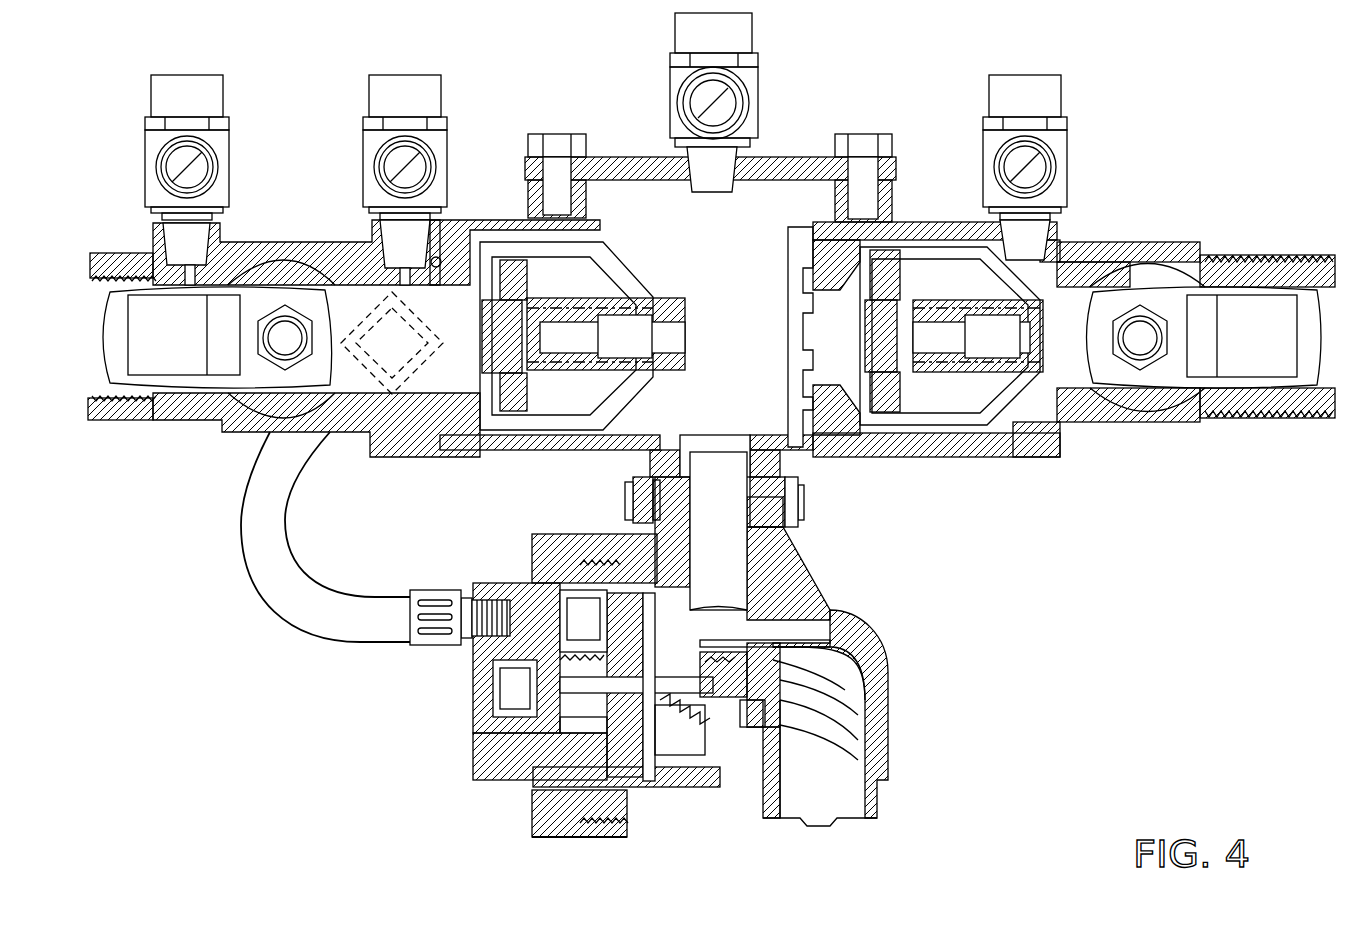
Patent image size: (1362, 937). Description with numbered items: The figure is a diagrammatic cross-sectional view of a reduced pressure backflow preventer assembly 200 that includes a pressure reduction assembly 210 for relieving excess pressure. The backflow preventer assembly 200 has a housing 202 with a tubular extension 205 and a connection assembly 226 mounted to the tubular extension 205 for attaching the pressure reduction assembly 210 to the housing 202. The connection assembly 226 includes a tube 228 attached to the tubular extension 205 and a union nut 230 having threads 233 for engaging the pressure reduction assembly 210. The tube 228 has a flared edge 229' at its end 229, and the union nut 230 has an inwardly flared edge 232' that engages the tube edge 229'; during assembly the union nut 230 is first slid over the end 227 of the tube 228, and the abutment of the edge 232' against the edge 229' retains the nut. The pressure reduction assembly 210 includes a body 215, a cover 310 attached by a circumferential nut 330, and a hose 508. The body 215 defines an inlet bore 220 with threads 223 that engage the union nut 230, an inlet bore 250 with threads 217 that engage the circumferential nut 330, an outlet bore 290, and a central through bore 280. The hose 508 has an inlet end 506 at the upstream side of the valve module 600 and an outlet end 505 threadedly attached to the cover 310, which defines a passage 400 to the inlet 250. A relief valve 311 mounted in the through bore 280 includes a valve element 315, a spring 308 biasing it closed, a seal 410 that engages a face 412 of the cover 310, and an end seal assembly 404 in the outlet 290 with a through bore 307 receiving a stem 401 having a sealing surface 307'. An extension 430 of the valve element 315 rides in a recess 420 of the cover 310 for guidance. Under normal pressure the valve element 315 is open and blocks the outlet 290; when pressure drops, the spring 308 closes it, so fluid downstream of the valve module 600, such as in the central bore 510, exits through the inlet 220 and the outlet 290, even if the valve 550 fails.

The reduced pressure backflow preventer assembly 200 is at (628, 86).
The housing 202 is at (490, 455).
The tubular extension 205 is at (668, 445).
The pressure reduction assembly 210 is at (805, 592).
The body 215 is at (885, 780).
The threads 217 is at (625, 825).
The inlet bore 220 is at (745, 515).
The threads 223 is at (783, 527).
The connection assembly 226 is at (905, 477).
The end 227 is at (692, 446).
The tube 228 is at (747, 440).
The end 229 is at (735, 487).
The flared edge 229' is at (602, 495).
The union nut 230 is at (790, 505).
The inwardly flared edge 232' is at (731, 485).
The threads 233 is at (633, 506).
The inlet bore 250 is at (583, 610).
The central through bore 280 is at (697, 632).
The outlet bore 290 is at (840, 803).
The through bore 307 is at (847, 691).
The sealing surface 307' is at (860, 665).
The spring 308 is at (668, 760).
The cover 310 is at (540, 815).
The relief valve 311 is at (770, 643).
The valve element 315 is at (655, 775).
The circumferential nut 330 is at (540, 837).
The passage 400 is at (490, 613).
The stem 401 is at (782, 690).
The end seal assembly 404 is at (778, 730).
The seal 410 is at (558, 770).
The face 412 is at (563, 610).
The recess 420 is at (500, 697).
The extension 430 is at (513, 722).
The outlet end 505 is at (470, 655).
The inlet end 506 is at (318, 240).
The hose 508 is at (262, 537).
The central bore 510 is at (737, 255).
The valve 550 is at (842, 248).
The valve module 600 is at (445, 225).